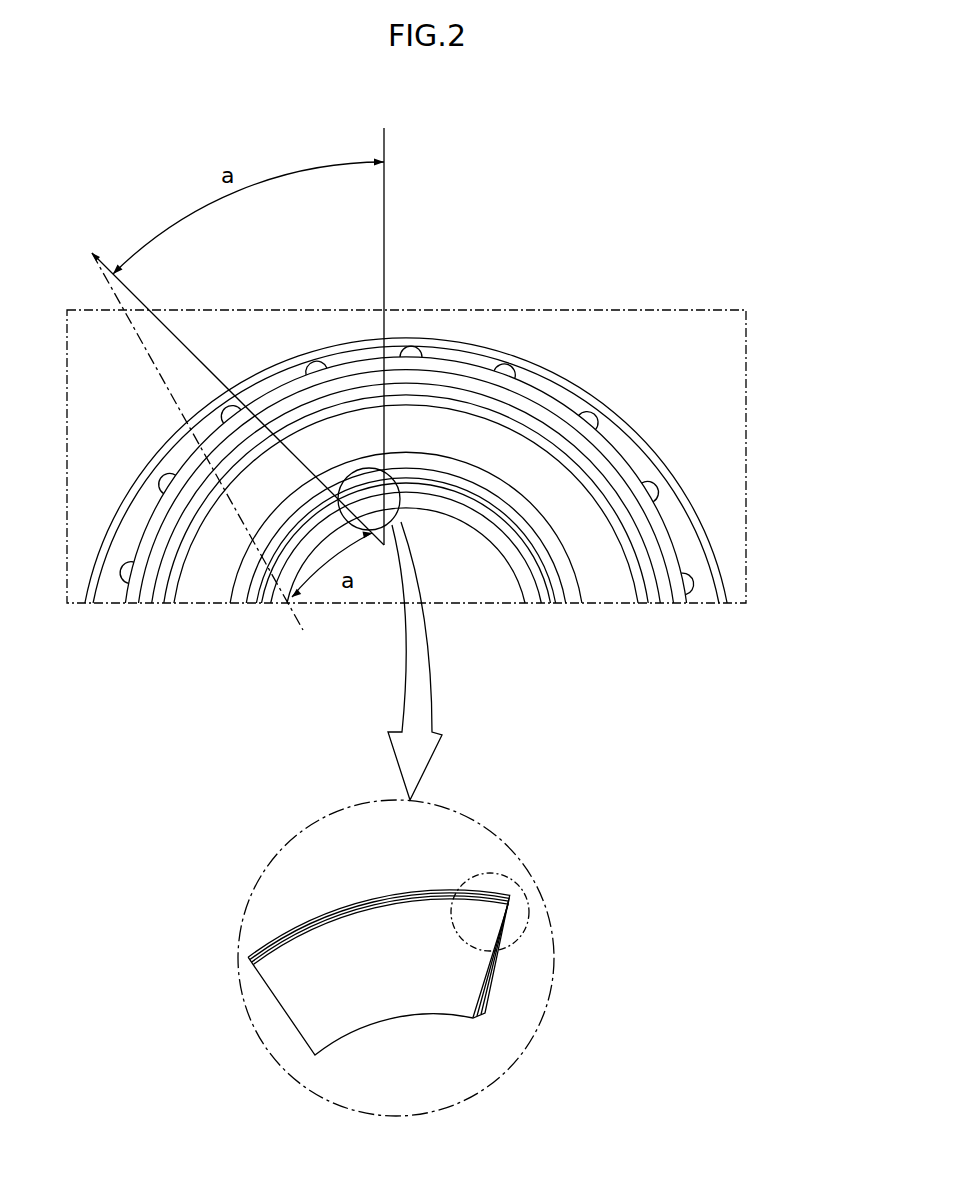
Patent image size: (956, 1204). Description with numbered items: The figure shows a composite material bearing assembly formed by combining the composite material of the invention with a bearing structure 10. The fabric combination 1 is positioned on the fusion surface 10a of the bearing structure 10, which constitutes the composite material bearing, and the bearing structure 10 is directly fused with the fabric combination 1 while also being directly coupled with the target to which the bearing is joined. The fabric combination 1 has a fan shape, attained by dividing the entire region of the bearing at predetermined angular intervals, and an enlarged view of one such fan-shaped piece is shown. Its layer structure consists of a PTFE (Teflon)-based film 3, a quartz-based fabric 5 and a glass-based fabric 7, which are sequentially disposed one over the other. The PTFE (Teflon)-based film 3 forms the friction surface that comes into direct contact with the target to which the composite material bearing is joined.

The fabric combination 1 is at (435, 866).
The PTFE (Teflon)-based film 3 is at (493, 917).
The quartz-based fabric 5 is at (498, 910).
The glass-based fabric 7 is at (508, 902).
The bearing structure 10 is at (467, 480).
The fusion surface 10a is at (532, 518).